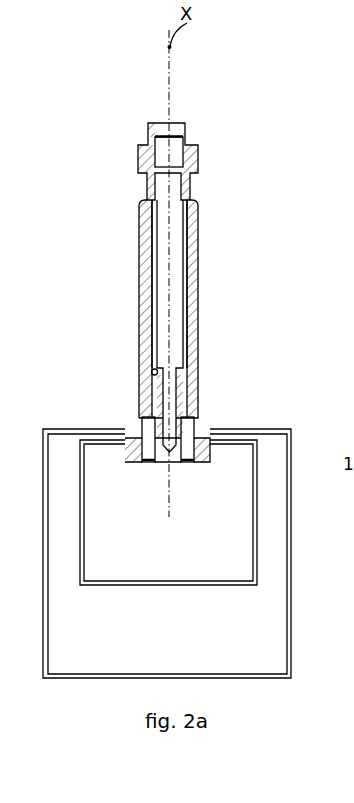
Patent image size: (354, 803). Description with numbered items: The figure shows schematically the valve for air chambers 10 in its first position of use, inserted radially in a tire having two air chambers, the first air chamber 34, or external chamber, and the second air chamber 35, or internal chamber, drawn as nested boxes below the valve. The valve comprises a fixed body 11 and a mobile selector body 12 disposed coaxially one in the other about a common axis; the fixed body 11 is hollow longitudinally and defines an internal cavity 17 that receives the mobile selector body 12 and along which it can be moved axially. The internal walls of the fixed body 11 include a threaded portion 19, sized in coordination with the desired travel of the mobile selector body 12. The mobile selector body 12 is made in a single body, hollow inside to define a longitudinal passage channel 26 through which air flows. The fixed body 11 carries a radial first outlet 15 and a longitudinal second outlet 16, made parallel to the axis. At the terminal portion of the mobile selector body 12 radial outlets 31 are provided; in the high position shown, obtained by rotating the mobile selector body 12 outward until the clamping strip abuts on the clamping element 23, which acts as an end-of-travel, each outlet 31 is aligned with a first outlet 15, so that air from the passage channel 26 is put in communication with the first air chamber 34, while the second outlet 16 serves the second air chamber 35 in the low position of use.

The valve for air chambers 10 is at (271, 189).
The fixed body 11 is at (208, 274).
The mobile selector body 12 is at (120, 152).
The first outlet 15 is at (197, 430).
The second outlet 16 is at (147, 467).
The internal cavity 17 is at (150, 231).
The threaded portion 19 is at (185, 311).
The clamping element 23 is at (190, 473).
The longitudinal passage channel 26 is at (160, 150).
The outlets 31 is at (147, 430).
The first air chamber 34 is at (276, 431).
The second air chamber 35 is at (254, 491).